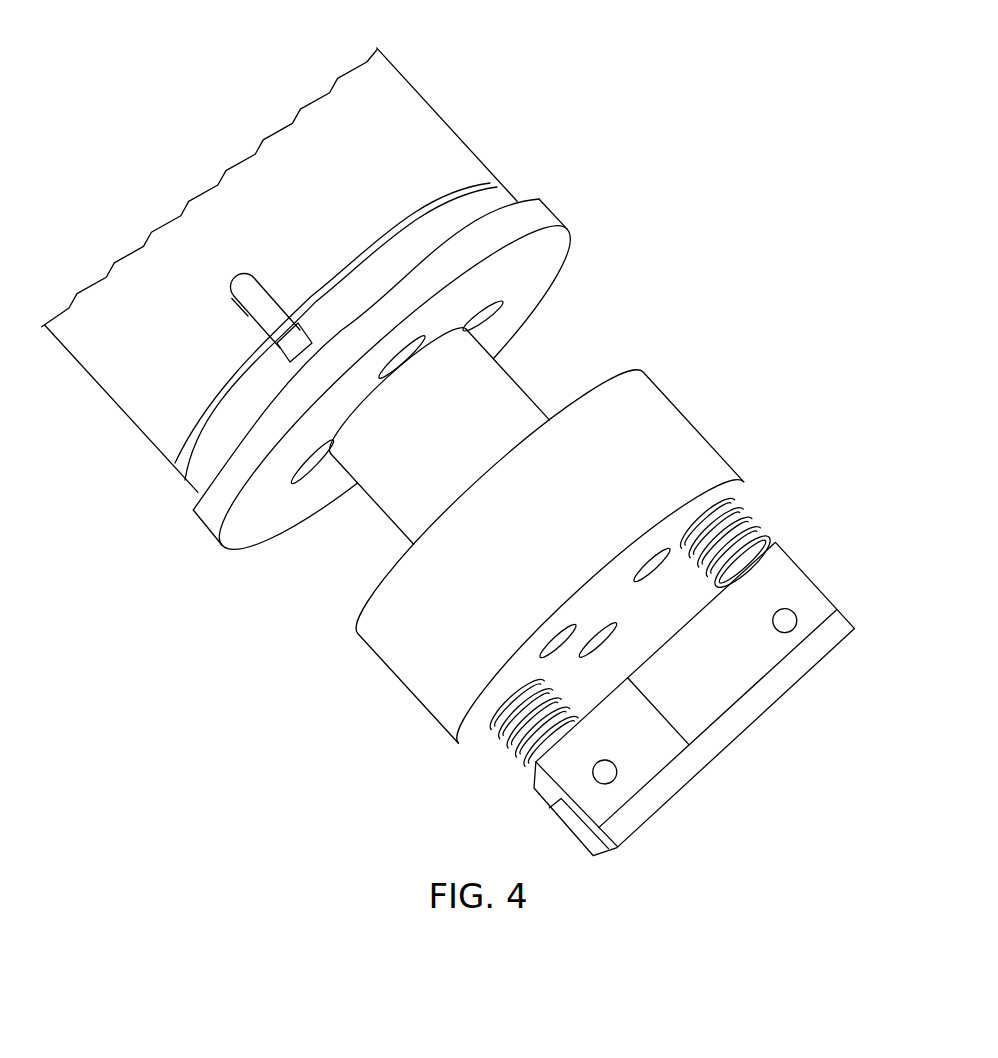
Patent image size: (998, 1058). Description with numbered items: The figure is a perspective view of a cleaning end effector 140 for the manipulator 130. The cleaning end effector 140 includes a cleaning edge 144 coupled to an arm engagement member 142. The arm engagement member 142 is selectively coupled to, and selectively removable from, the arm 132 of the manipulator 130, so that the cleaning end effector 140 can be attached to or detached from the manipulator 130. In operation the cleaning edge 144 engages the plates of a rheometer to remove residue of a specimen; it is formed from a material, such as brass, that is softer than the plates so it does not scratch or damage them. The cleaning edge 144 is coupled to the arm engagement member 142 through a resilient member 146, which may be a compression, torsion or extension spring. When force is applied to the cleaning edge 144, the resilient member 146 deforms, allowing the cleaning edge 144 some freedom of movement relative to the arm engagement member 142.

The manipulator 130 is at (287, 263).
The arm 132 is at (373, 275).
The cleaning end effector 140 is at (412, 350).
The arm engagement member 142 is at (565, 238).
The cleaning edge 144 is at (863, 663).
The resilient member 146 is at (658, 604).